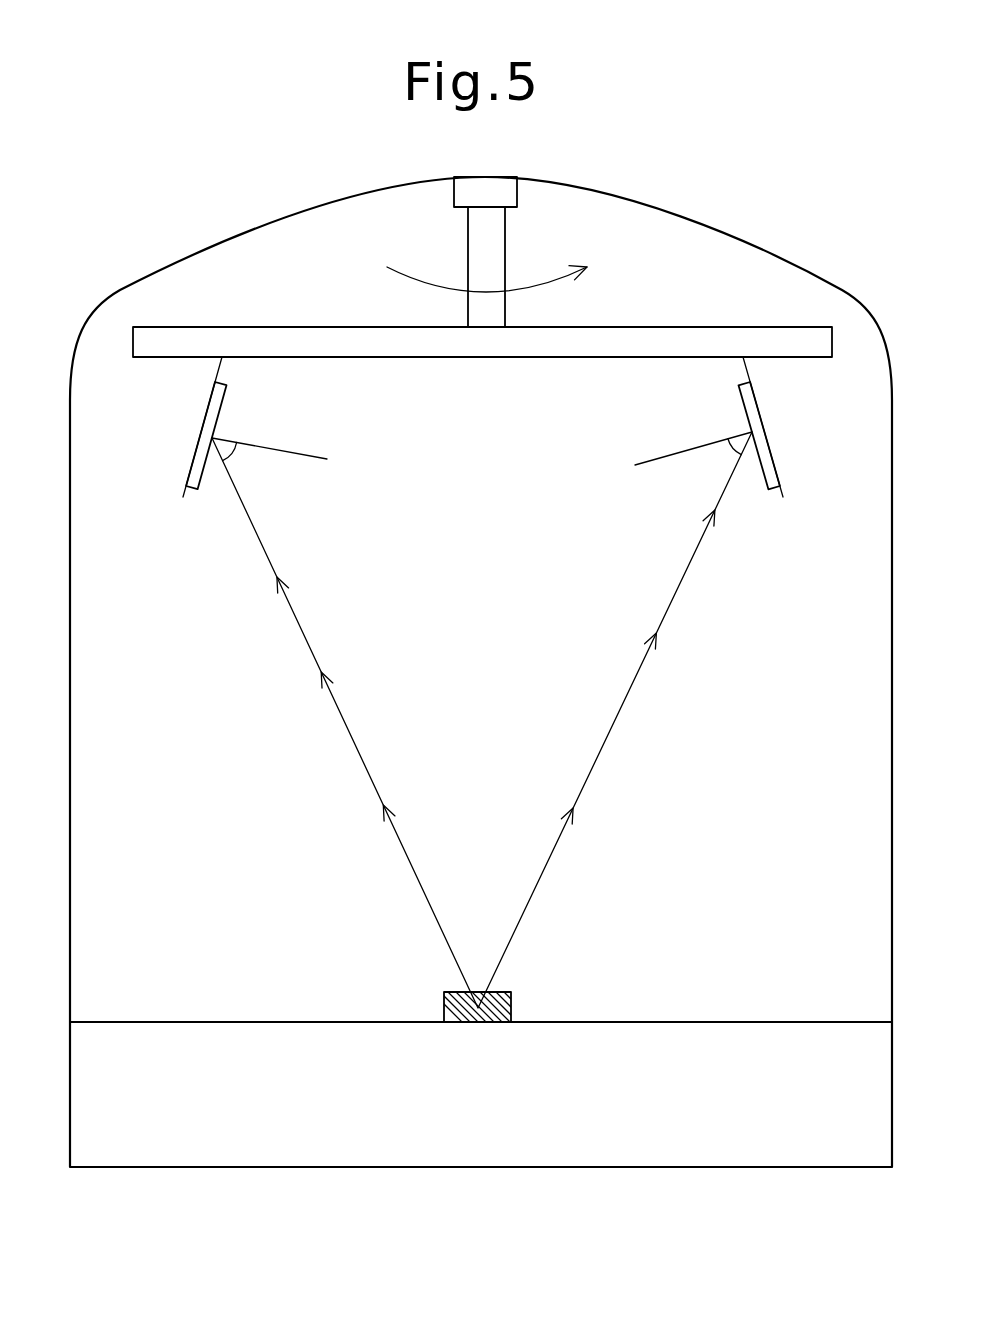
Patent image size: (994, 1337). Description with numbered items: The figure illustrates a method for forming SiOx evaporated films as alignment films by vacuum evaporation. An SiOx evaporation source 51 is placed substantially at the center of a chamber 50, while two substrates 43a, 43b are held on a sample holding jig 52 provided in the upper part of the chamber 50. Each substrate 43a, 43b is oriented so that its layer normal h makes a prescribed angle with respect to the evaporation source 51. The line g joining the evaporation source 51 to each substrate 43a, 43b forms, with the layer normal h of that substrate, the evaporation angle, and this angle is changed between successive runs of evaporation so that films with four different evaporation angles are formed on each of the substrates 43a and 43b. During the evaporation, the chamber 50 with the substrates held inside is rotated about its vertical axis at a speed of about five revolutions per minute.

The chamber 50 is at (98, 310).
The sample holding jig 52 is at (836, 340).
The substrate 43a is at (769, 445).
The substrate 43b is at (198, 428).
The SiOx evaporation source 51 is at (444, 1005).
The line joining the evaporation source to each substrate g is at (353, 742).
The layer normal h is at (277, 447).